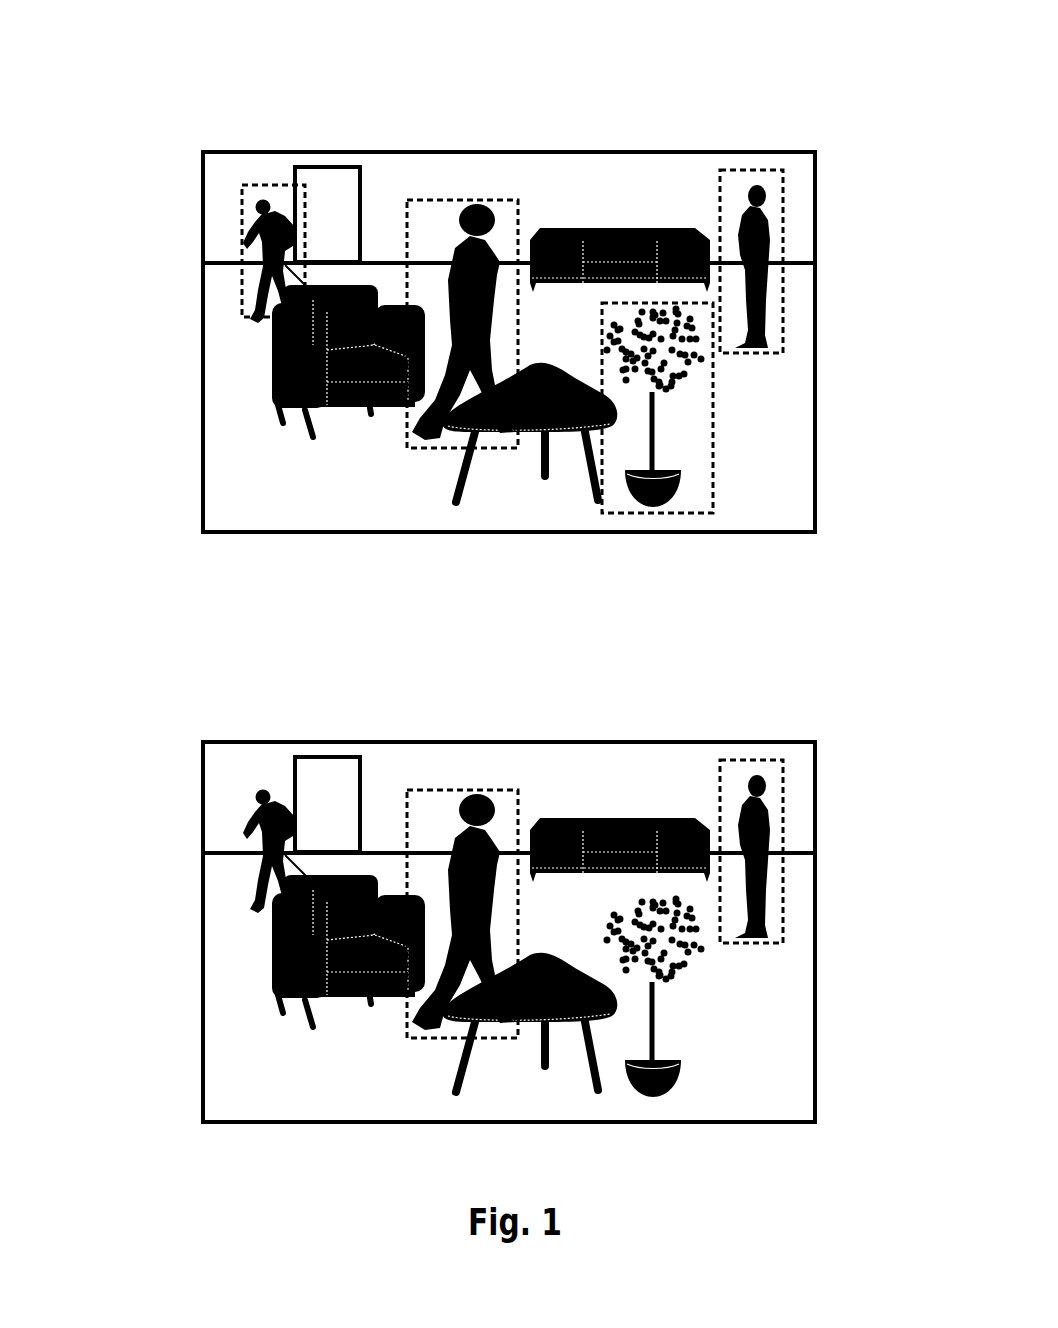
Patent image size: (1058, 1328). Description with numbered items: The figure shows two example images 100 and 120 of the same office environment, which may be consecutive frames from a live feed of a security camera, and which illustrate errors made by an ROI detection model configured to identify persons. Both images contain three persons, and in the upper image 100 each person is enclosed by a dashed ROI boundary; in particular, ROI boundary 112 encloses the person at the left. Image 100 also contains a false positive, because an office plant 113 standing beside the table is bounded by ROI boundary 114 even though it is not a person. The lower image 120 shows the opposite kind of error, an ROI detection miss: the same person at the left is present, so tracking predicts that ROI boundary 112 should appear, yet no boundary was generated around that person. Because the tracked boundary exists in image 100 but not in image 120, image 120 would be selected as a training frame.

The image 100 is at (509, 268).
The image 120 is at (509, 860).
The ROI boundary 112 is at (243, 253).
The office plant 113 is at (653, 410).
The ROI boundary 114 is at (713, 438).